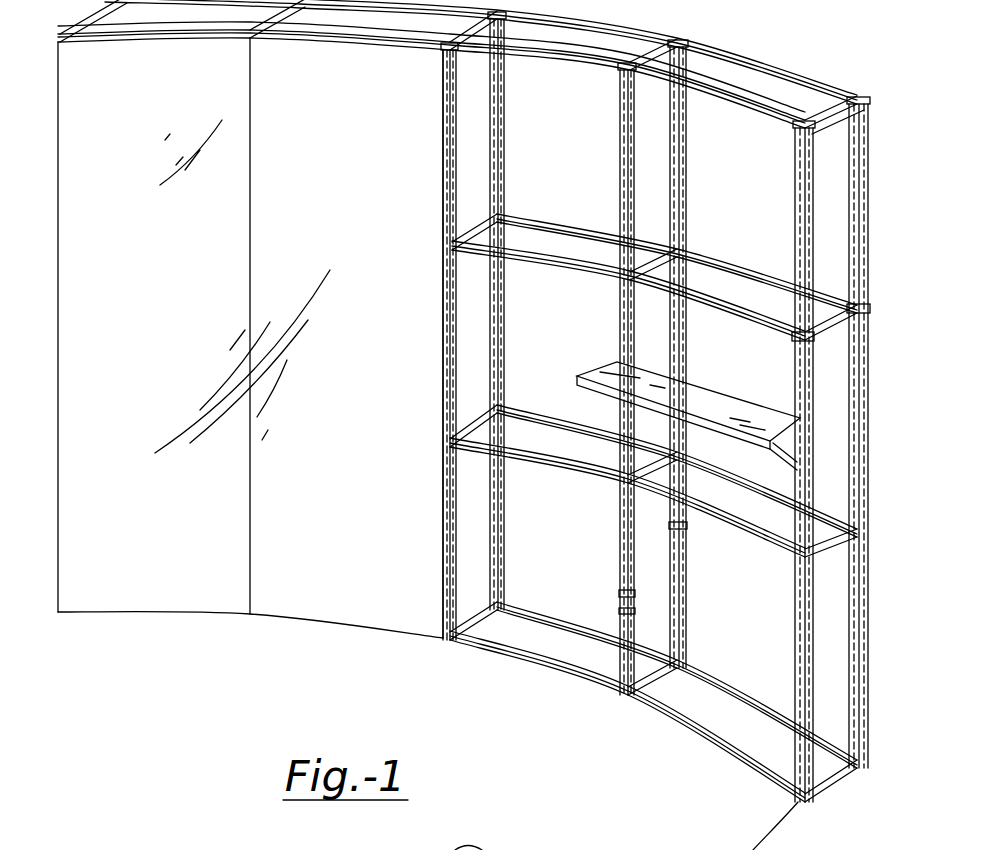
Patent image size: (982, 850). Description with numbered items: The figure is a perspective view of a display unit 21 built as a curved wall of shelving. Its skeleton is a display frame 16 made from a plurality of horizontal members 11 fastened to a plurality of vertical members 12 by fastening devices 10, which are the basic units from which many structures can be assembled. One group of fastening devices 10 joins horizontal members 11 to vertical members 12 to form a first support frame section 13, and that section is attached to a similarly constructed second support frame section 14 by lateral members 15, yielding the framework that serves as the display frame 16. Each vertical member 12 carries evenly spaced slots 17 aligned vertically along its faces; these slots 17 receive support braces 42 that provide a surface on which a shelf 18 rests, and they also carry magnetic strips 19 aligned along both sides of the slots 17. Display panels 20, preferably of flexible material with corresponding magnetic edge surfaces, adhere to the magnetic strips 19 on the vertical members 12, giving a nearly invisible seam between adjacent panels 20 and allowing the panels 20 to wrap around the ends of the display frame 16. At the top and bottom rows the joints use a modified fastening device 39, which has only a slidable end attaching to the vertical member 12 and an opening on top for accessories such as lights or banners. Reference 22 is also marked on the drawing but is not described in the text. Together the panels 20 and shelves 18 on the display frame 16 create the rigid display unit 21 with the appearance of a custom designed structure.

The fastening device 10 is at (866, 299).
The horizontal member 11 is at (757, 62).
The vertical member 12 is at (865, 227).
The first support frame section 13 is at (617, 657).
The second support frame section 14 is at (692, 616).
The lateral member 15 is at (622, 66).
The display frame 16 is at (677, 723).
The slot 17 is at (677, 527).
The shelf 18 is at (597, 367).
The magnetic strip 19 is at (447, 643).
The display panel 20 is at (155, 585).
The display unit 21 is at (270, 635).
The top connector 22 is at (612, 82).
The modified fastening device 39 is at (681, 33).
The support brace 42 is at (800, 445).